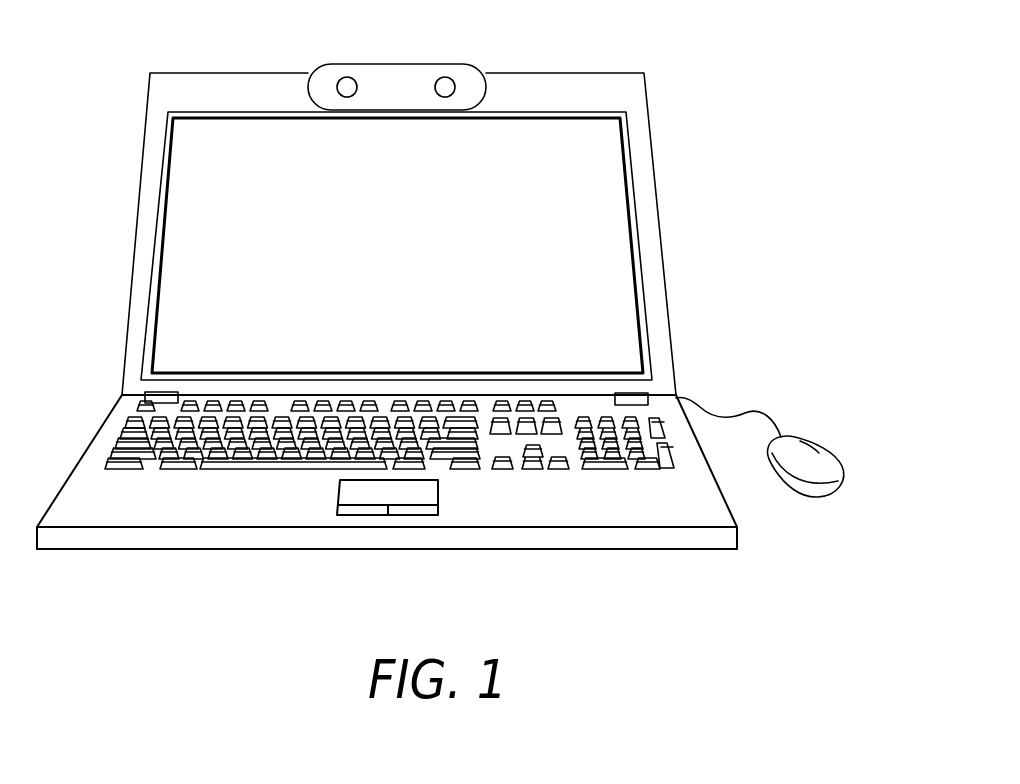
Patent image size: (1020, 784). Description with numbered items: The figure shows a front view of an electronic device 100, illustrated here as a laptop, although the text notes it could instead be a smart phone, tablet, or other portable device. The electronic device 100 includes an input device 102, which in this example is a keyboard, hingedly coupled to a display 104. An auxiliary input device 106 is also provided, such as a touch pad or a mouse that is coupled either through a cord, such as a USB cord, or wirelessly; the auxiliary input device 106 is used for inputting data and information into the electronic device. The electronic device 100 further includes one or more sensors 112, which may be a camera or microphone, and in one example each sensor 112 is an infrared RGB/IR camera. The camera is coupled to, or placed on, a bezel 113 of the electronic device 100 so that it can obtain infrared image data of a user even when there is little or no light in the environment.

The electronic device 100 is at (693, 43).
The input device 102 is at (467, 494).
The display 104 is at (645, 168).
The auxiliary input device 106 is at (364, 494).
The sensor 112 is at (446, 77).
The bezel 113 is at (547, 90).